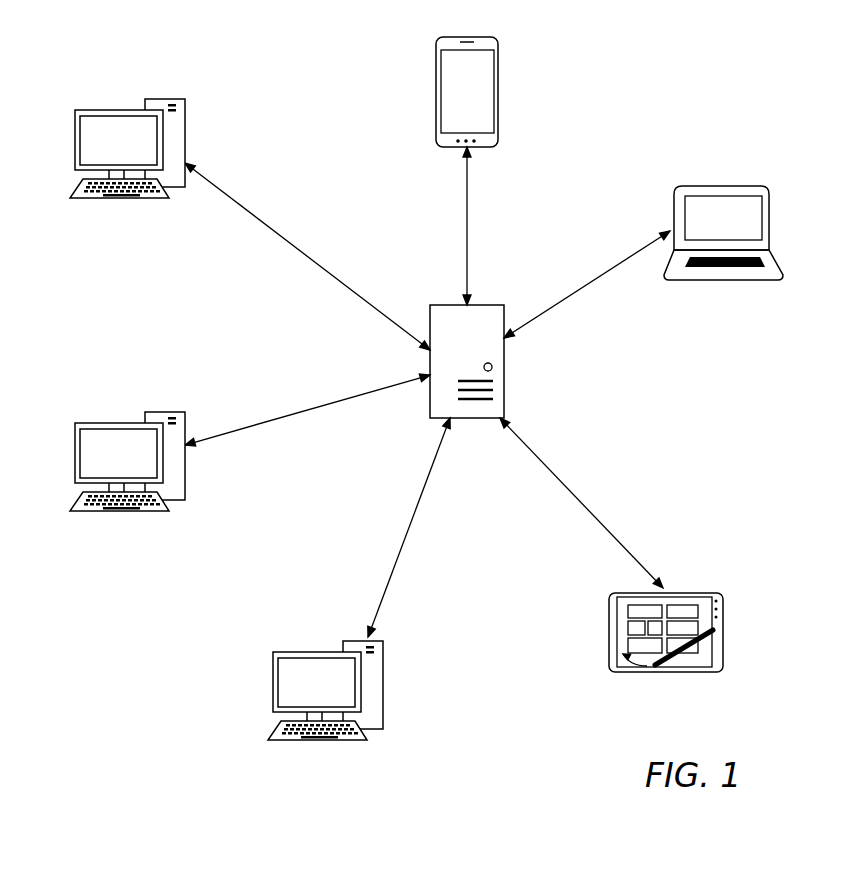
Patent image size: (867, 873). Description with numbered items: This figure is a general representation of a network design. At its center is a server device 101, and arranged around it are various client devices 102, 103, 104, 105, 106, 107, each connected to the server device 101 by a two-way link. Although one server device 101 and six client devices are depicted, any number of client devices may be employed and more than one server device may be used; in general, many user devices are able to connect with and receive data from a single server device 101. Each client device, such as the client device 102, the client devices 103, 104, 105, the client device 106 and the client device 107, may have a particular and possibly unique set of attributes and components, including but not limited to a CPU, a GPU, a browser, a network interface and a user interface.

The server device 101 is at (514, 361).
The client device 102 is at (485, 112).
The client device 103 is at (127, 175).
The client device 104 is at (127, 487).
The client device 105 is at (325, 716).
The client device 106 is at (702, 632).
The client device 107 is at (755, 233).